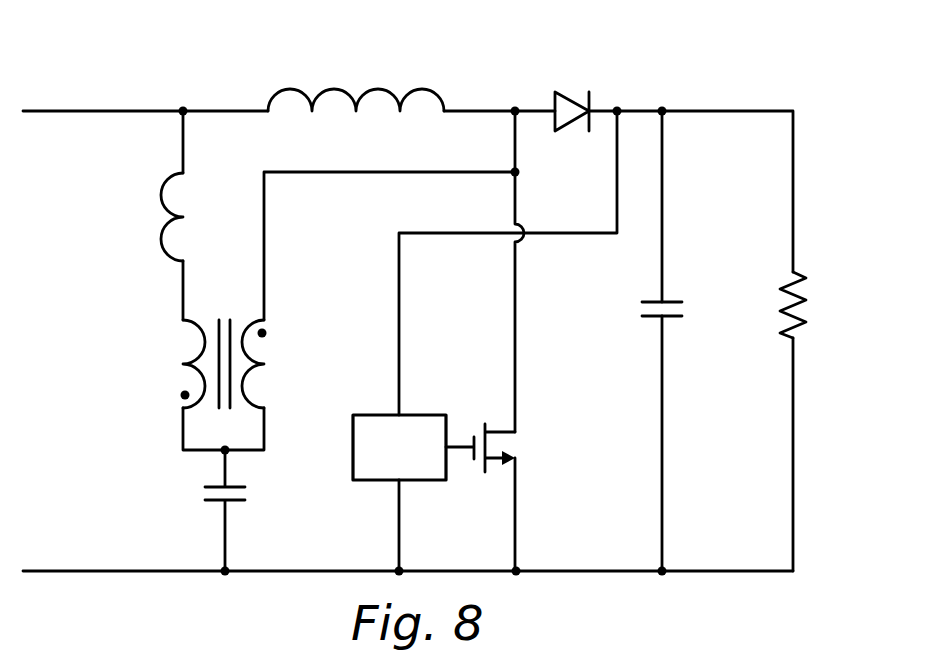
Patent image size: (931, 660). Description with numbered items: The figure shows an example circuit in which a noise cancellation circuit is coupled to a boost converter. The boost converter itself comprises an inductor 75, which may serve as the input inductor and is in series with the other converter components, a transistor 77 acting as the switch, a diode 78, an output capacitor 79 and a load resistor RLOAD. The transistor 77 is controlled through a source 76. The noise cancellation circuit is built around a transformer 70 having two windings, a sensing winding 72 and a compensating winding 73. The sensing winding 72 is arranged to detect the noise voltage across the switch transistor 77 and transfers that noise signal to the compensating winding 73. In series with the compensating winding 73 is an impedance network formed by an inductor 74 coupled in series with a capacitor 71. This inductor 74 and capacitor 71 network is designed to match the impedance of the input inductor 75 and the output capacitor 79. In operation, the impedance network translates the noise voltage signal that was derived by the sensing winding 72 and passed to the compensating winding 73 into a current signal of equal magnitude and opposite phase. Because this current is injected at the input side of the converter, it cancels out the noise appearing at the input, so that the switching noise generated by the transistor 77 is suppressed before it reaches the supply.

The transformer 70 is at (222, 318).
The capacitor 71 is at (238, 501).
The sensing winding 72 is at (245, 382).
The compensating winding 73 is at (201, 347).
The inductor 74 is at (162, 233).
The input inductor 75 is at (344, 90).
The source 76 is at (425, 414).
The transistor 77 is at (517, 448).
The diode 78 is at (577, 92).
The output capacitor 79 is at (672, 318).
The resistor RLOAD is at (805, 313).